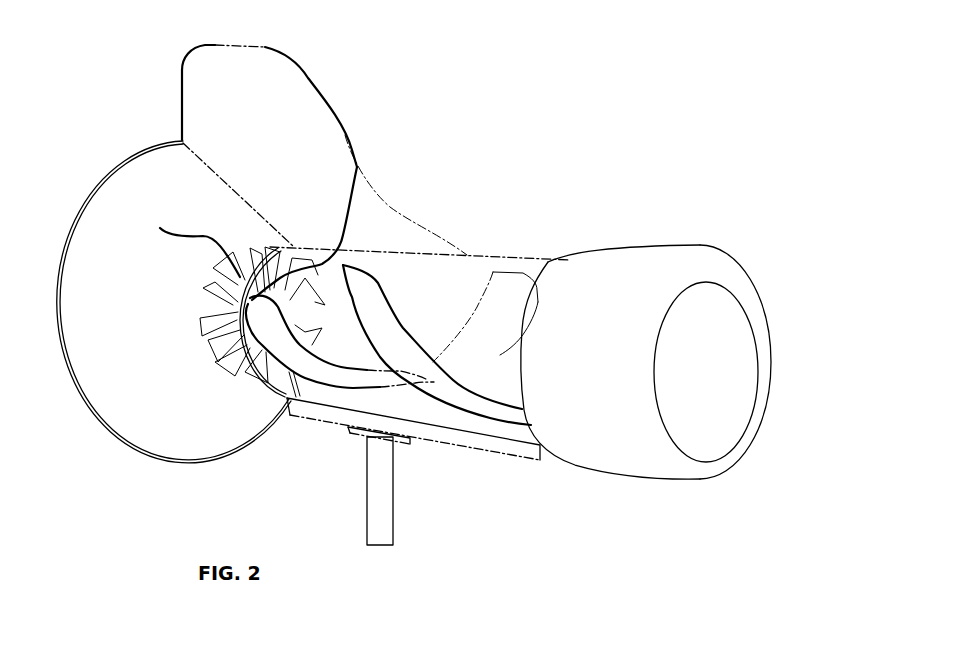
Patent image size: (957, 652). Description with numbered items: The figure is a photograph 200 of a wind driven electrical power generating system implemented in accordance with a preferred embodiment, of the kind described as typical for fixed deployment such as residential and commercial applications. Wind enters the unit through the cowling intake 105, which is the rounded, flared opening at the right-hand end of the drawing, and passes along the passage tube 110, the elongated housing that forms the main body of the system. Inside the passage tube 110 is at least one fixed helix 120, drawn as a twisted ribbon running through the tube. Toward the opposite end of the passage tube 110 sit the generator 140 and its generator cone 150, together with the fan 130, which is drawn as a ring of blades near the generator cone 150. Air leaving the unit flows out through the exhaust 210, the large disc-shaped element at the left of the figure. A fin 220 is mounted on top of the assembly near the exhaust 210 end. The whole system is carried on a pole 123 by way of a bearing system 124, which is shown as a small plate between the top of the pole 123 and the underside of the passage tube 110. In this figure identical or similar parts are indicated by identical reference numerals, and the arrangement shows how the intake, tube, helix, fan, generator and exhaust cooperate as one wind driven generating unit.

The photograph 200 is at (718, 88).
The cowling intake 105 is at (678, 265).
The passage tube 110 is at (535, 257).
The fixed helix 120 is at (412, 347).
The pole 123 is at (387, 510).
The bearing system 124 is at (380, 432).
The fan 130 is at (160, 228).
The generator 140 is at (357, 167).
The generator cone 150 is at (320, 310).
The exhaust 210 is at (149, 391).
The fin 220 is at (262, 78).